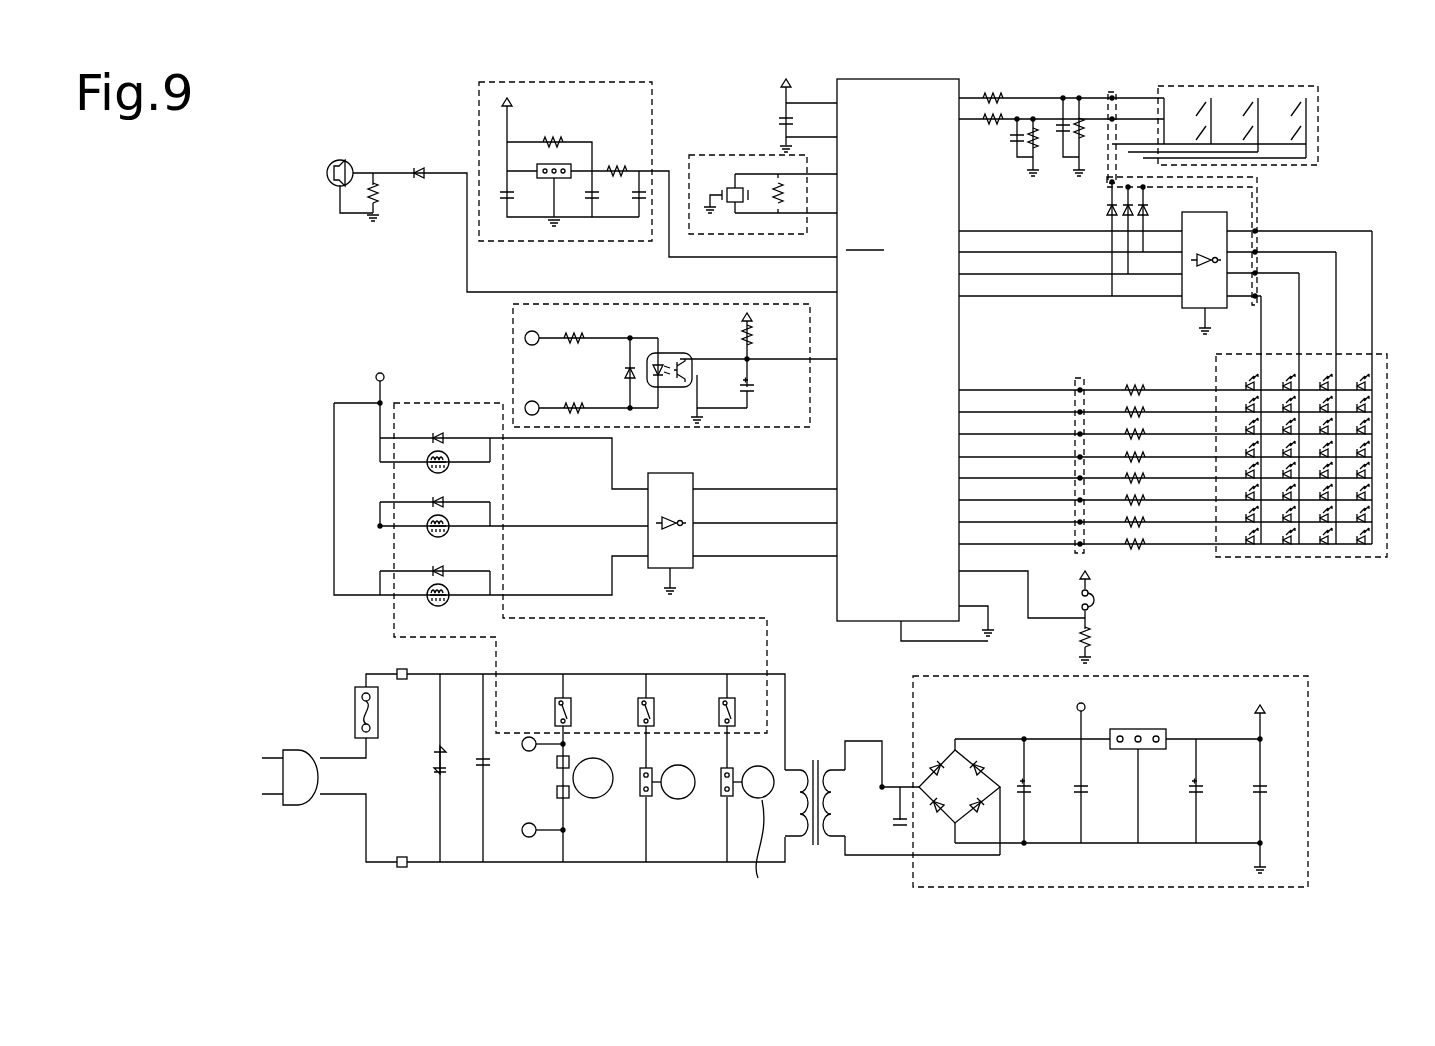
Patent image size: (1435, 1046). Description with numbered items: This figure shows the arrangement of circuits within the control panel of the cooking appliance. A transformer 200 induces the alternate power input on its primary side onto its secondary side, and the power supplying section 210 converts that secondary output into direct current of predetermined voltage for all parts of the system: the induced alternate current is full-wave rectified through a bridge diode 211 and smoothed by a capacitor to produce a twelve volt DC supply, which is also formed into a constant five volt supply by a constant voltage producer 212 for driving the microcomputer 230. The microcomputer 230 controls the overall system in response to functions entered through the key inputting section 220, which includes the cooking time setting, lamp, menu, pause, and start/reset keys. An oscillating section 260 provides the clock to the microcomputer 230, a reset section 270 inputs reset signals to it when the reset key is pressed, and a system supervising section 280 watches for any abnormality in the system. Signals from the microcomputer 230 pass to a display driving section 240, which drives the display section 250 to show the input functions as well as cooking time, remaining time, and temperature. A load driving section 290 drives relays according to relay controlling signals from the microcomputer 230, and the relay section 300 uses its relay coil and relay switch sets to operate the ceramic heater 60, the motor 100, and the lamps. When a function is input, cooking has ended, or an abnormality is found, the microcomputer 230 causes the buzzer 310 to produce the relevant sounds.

The microcomputer 230 is at (905, 78).
The reset section 270 is at (479, 91).
The oscillating section 260 is at (708, 155).
The buzzer 310 is at (327, 170).
The system supervising section 280 is at (513, 320).
The load driving section 290 is at (680, 473).
The relay section 300 is at (393, 630).
The ceramic heater 60 is at (598, 800).
The motor 100 is at (679, 800).
The transformer 200 is at (810, 773).
The power supplying section 210 is at (1222, 676).
The bridge diode 211 is at (948, 742).
The constant voltage producer 212 is at (1143, 729).
The key inputting section 220 is at (1320, 118).
The display driving section 240 is at (1220, 214).
The display section 250 is at (1328, 557).